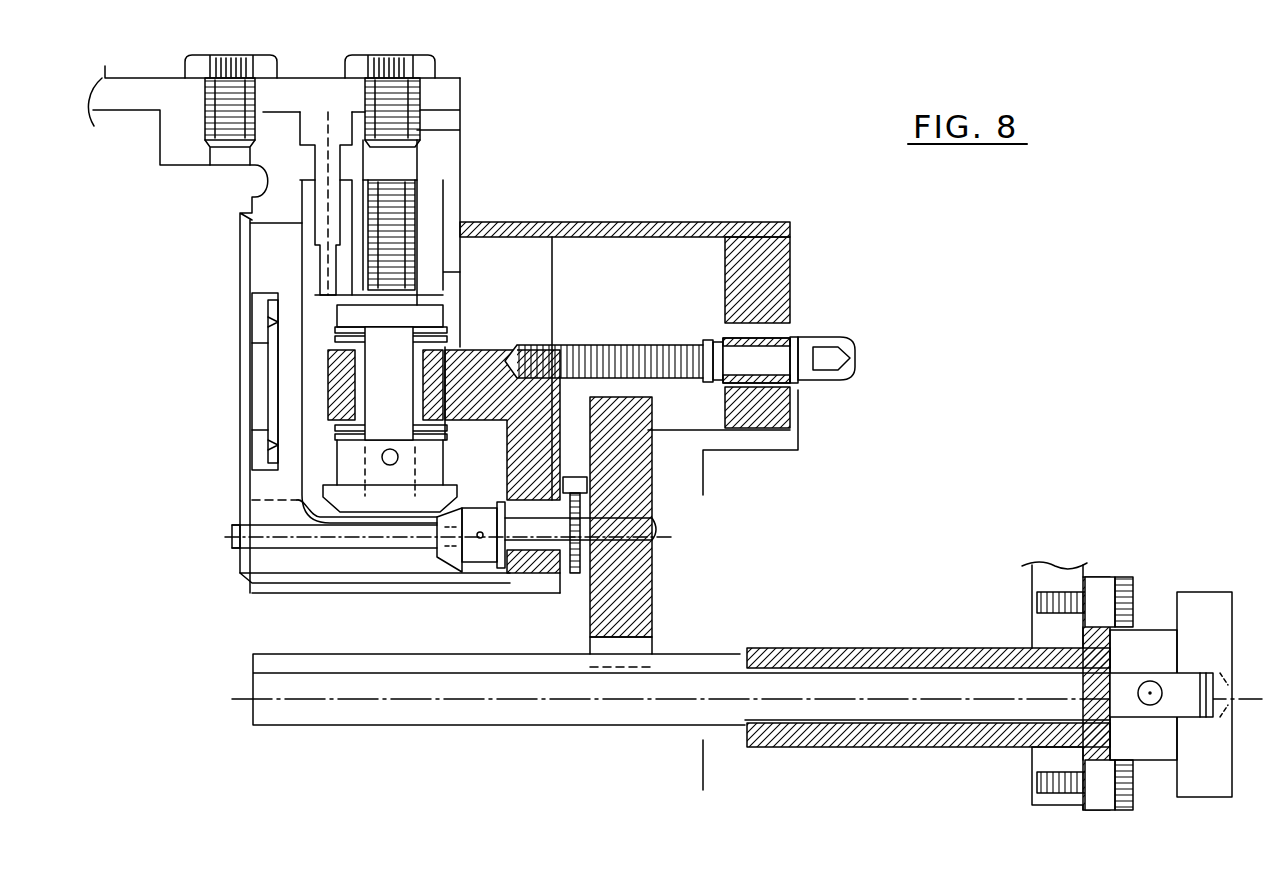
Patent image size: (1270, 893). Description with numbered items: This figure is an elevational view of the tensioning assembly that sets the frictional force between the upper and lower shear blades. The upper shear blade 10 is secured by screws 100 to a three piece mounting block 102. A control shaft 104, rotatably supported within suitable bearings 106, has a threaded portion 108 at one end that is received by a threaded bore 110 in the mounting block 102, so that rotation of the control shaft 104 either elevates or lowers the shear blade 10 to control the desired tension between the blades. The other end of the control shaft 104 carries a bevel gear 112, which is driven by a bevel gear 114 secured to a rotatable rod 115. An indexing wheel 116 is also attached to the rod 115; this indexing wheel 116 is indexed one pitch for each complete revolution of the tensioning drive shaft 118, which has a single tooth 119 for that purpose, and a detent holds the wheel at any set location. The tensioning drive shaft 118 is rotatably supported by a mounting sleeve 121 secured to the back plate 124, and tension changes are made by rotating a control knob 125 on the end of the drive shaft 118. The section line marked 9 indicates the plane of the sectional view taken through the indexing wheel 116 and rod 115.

The upper shear blade 10 is at (131, 92).
The screws 100 is at (240, 66).
The mounting block 102 is at (440, 148).
The control shaft 104 is at (412, 382).
The bearings 106 is at (447, 337).
The threaded portion 108 is at (420, 231).
The threaded bore 110 is at (415, 197).
The bevel gear 112 is at (322, 506).
The bevel gear 114 is at (440, 574).
The rotatable rod 115 is at (320, 538).
The indexing wheel 116 is at (658, 508).
The tensioning drive shaft 118 is at (360, 703).
The single tooth 119 is at (258, 666).
The mounting sleeve 121 is at (925, 658).
The back plate 124 is at (1062, 580).
The control knob 125 is at (1205, 610).
The section line 9- 9 is at (808, 401).